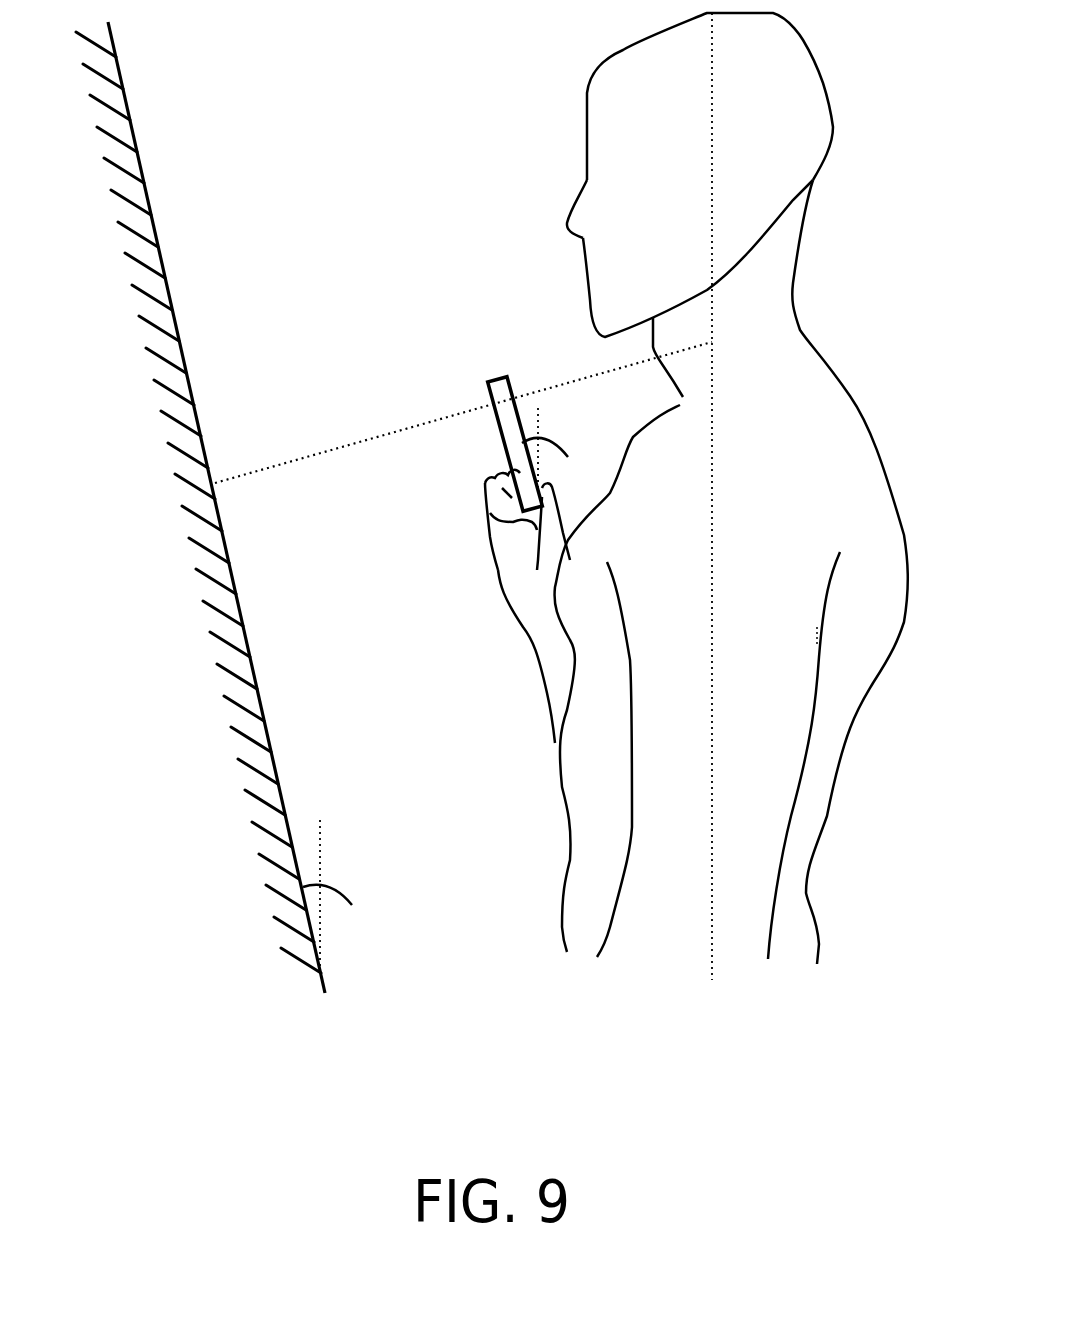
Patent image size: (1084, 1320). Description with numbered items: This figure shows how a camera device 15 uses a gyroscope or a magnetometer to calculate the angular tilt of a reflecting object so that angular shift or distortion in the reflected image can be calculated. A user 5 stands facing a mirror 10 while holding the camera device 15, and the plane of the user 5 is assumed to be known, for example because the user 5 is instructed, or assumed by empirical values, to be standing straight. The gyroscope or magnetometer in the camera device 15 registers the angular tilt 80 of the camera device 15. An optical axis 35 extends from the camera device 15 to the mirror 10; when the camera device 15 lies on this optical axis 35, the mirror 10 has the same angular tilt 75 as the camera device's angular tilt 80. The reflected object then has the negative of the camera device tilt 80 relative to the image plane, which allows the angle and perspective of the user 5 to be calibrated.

The user 5 is at (797, 270).
The mirror 10 is at (148, 175).
The camera device 15 is at (487, 383).
The optical axis 35 is at (372, 438).
The angular tilt of the mirror 75 is at (343, 885).
The angular tilt of the camera device 80 is at (560, 440).